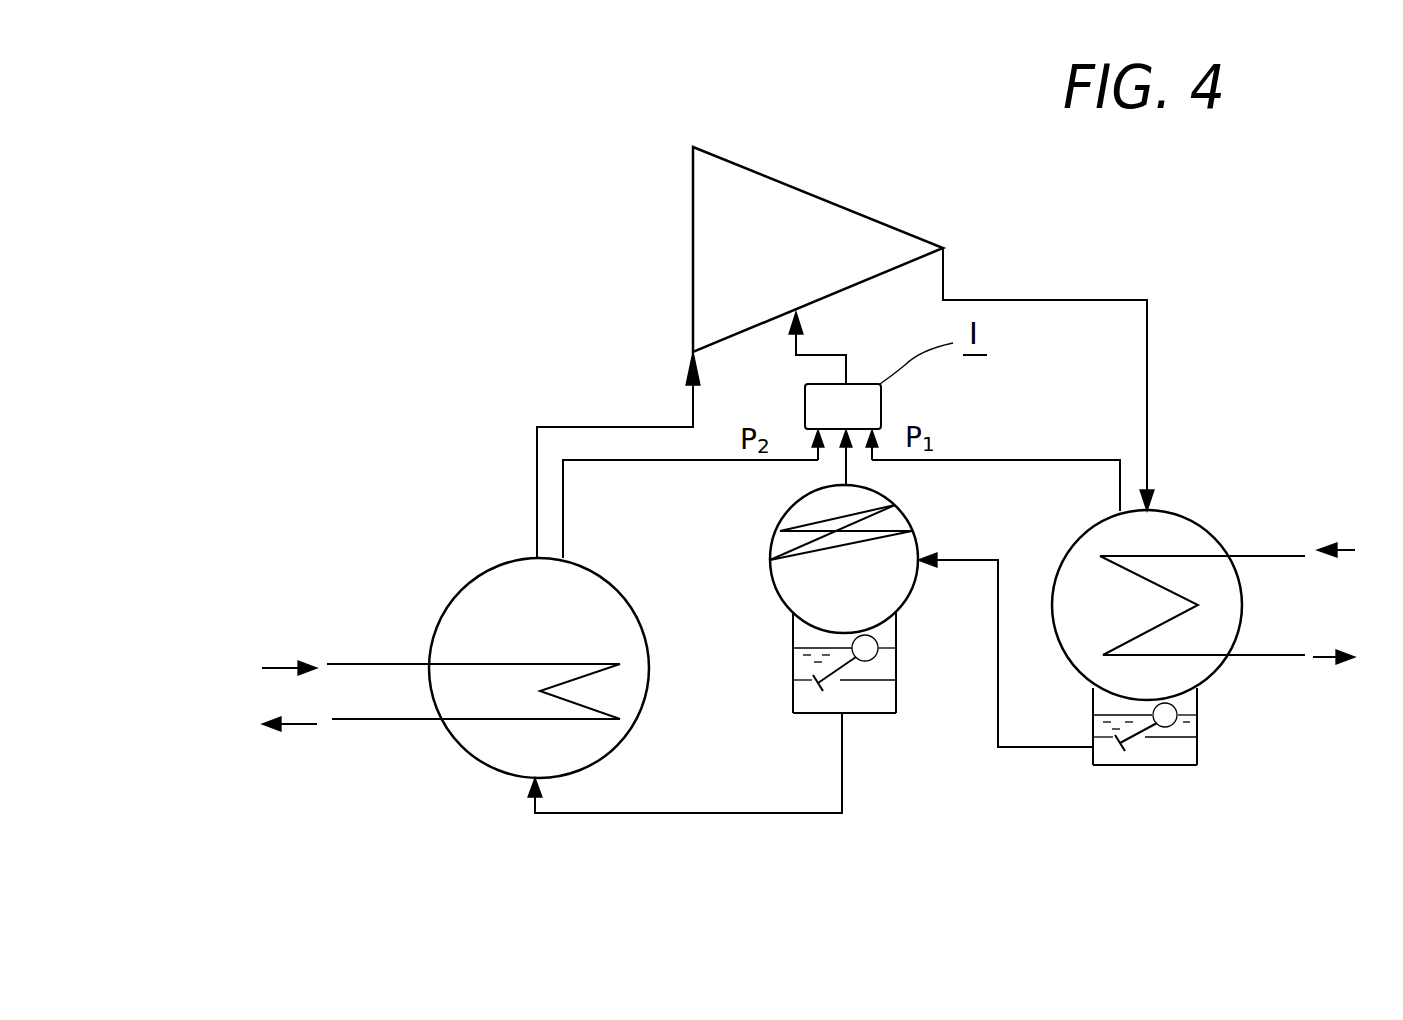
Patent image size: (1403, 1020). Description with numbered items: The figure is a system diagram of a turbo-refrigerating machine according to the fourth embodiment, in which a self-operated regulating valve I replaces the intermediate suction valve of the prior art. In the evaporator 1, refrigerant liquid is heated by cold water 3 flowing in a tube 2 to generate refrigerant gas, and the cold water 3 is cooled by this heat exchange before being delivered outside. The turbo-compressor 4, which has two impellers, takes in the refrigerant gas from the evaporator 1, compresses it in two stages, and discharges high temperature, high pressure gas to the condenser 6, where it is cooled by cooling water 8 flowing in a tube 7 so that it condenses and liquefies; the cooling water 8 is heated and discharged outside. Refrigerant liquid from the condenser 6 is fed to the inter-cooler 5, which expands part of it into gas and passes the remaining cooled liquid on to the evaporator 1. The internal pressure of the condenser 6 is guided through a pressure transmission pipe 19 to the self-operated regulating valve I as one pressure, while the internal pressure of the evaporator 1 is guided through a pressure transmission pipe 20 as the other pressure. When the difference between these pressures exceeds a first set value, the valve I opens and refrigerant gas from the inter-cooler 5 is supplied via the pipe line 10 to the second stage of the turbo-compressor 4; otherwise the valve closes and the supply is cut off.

The evaporator 1 is at (492, 568).
The tube 2 is at (467, 664).
The cold water 3 is at (277, 698).
The turbo-compressor 4 is at (855, 220).
The inter-cooler 5 is at (912, 586).
The condenser 6 is at (1180, 513).
The tube 7 is at (1196, 657).
The cooling water 8 is at (1348, 605).
The pipe line 10 is at (830, 352).
The pressure transmission pipe 19 is at (1003, 458).
The pressure transmission pipe 20 is at (710, 462).